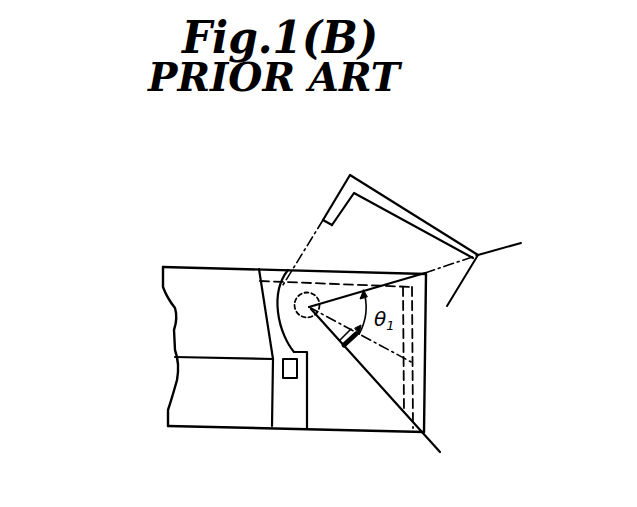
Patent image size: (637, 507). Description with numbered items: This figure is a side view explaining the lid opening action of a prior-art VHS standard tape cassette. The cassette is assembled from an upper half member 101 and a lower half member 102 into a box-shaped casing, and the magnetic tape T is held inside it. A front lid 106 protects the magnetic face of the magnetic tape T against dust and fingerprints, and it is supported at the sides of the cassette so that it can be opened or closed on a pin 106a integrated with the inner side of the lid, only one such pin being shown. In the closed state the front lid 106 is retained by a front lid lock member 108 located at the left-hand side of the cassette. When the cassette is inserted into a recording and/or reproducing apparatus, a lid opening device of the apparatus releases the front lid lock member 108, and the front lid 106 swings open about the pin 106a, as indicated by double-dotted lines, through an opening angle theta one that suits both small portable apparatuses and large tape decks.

The upper half member 101 is at (173, 317).
The lower half member 102 is at (215, 397).
The front lid 106 is at (443, 233).
The pin 106a is at (306, 285).
The front lid lock member 108 is at (283, 370).
The magnetic tape T is at (410, 323).